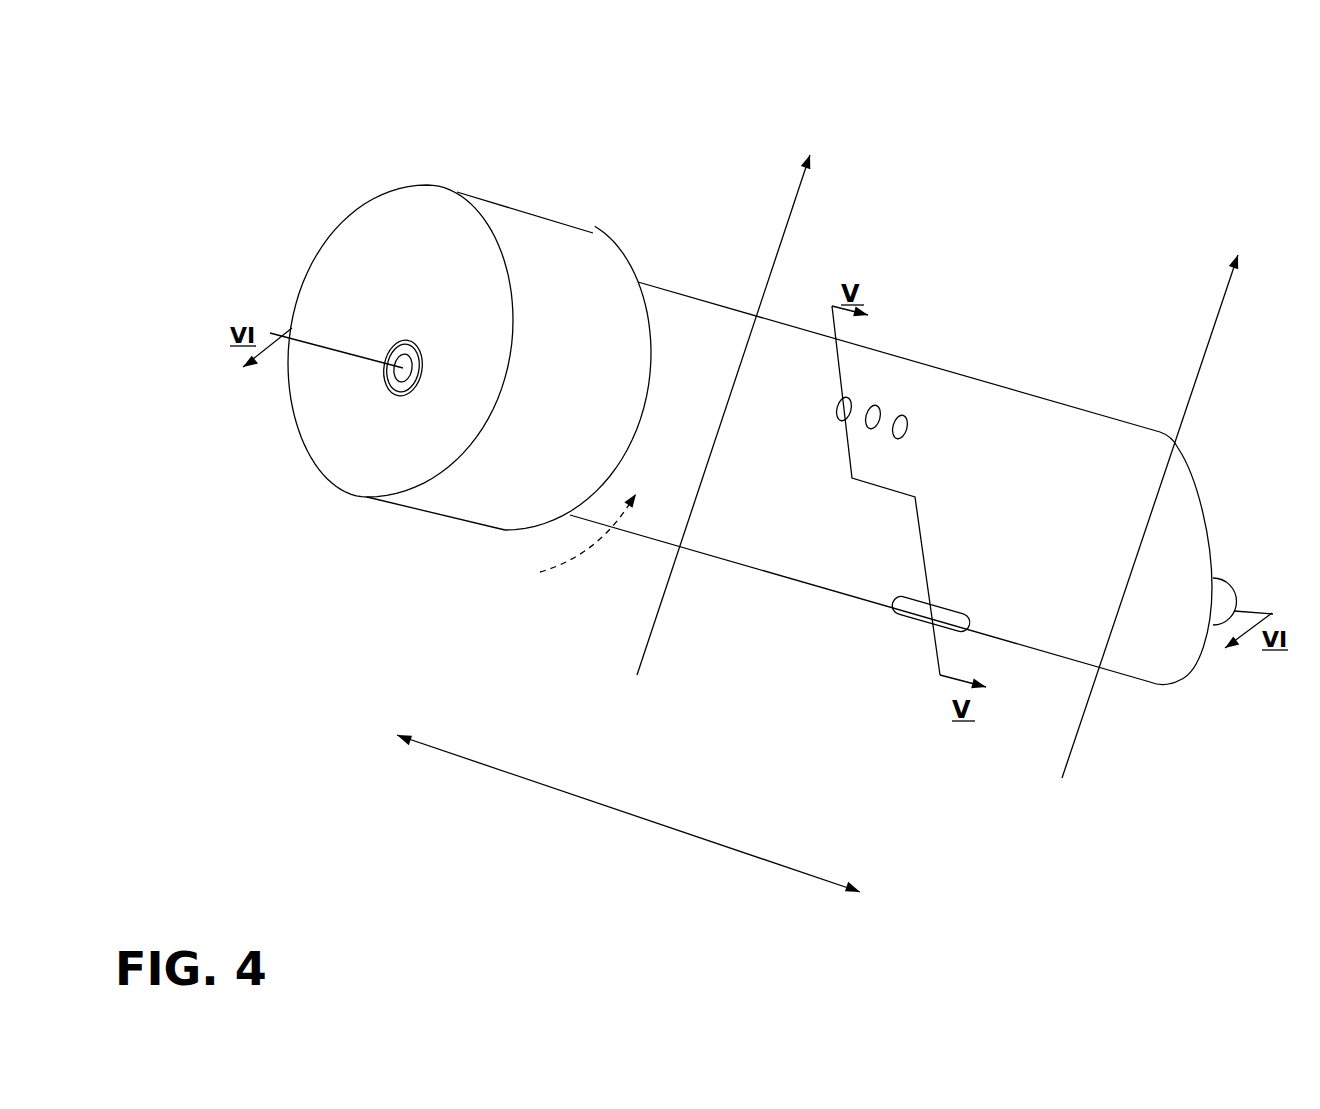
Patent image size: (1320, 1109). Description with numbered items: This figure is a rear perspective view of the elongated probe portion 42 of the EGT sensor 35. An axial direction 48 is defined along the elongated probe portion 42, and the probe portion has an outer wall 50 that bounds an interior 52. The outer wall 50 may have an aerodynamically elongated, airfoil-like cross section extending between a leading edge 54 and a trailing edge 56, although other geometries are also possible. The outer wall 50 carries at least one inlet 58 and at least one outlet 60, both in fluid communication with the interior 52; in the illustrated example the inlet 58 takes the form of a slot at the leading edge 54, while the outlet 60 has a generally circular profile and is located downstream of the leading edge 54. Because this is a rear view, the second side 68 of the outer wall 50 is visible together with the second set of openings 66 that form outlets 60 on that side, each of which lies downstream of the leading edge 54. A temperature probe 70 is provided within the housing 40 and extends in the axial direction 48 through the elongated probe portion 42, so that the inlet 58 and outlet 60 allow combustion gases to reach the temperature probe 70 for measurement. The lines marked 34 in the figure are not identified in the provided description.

The section line 34 is at (650, 624).
The EGT sensor 35 is at (1165, 140).
The housing 40 is at (365, 212).
The elongated probe portion 42 is at (518, 208).
The axial direction 48 is at (637, 817).
The outer wall 50 is at (928, 459).
The interior 52 is at (561, 544).
The leading edge 54 is at (748, 568).
The trailing edge 56 is at (707, 300).
The inlet 58 is at (907, 608).
The outlet 60 is at (913, 411).
The second set of openings 66 is at (873, 401).
The second side 68 is at (1082, 435).
The temperature probe 70 is at (1218, 576).